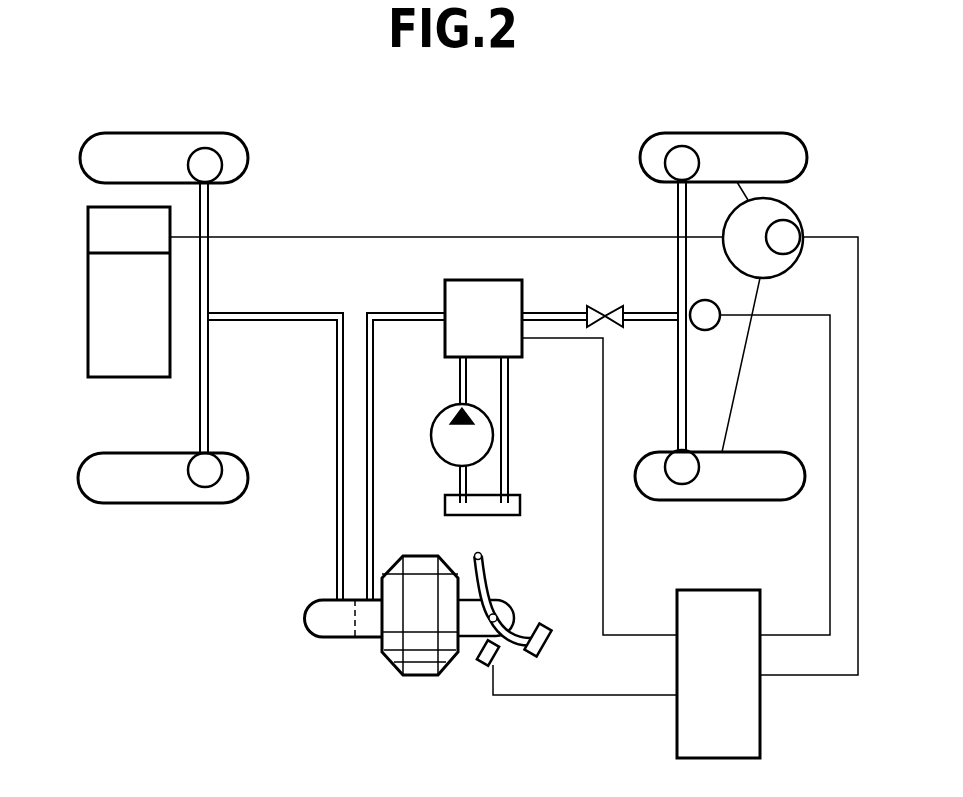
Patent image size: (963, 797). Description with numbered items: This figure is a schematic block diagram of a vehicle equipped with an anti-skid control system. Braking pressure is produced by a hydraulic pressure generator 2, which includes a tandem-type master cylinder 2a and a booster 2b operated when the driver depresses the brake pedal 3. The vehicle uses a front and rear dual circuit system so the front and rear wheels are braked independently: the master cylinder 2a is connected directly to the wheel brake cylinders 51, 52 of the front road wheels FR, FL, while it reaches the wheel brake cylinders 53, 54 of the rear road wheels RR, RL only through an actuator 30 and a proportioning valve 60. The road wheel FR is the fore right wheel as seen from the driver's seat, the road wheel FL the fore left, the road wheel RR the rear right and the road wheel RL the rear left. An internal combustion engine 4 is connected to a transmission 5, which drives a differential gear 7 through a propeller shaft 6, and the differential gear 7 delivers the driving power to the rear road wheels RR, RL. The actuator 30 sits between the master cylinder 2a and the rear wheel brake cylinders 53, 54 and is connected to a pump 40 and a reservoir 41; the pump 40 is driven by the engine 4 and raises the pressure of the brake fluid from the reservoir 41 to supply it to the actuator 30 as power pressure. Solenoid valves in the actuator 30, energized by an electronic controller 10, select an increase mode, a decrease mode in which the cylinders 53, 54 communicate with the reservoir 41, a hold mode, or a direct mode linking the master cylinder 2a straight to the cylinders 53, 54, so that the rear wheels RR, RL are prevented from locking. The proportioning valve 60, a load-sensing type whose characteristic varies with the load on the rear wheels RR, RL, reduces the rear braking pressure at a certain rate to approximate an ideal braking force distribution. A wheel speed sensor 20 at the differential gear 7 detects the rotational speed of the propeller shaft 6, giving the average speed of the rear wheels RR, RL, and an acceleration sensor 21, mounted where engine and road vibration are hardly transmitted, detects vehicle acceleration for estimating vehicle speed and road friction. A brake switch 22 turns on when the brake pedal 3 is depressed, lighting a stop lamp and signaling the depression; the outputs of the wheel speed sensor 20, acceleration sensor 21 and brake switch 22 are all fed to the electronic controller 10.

The hydraulic pressure generator 2 is at (395, 650).
The master cylinder 2a is at (330, 624).
The booster 2b is at (418, 676).
The brake pedal 3 is at (548, 628).
The internal combustion engine 4 is at (115, 321).
The transmission 5 is at (97, 233).
The propeller shaft 6 is at (368, 237).
The differential gear 7 is at (800, 206).
The electronic controller 10 is at (760, 724).
The wheel speed sensor 20 is at (782, 254).
The acceleration sensor 21 is at (708, 331).
The brake switch 22 is at (482, 672).
The actuator 30 is at (456, 293).
The pump 40 is at (446, 450).
The reservoir 41 is at (518, 507).
The wheel brake cylinder 51 is at (215, 170).
The wheel brake cylinder 52 is at (216, 467).
The wheel brake cylinder 53 is at (679, 168).
The wheel brake cylinder 54 is at (682, 484).
The proportioning valve 60 is at (612, 308).
The road wheel FR is at (245, 152).
The road wheel FL is at (220, 490).
The road wheel RR is at (645, 148).
The road wheel RL is at (762, 498).